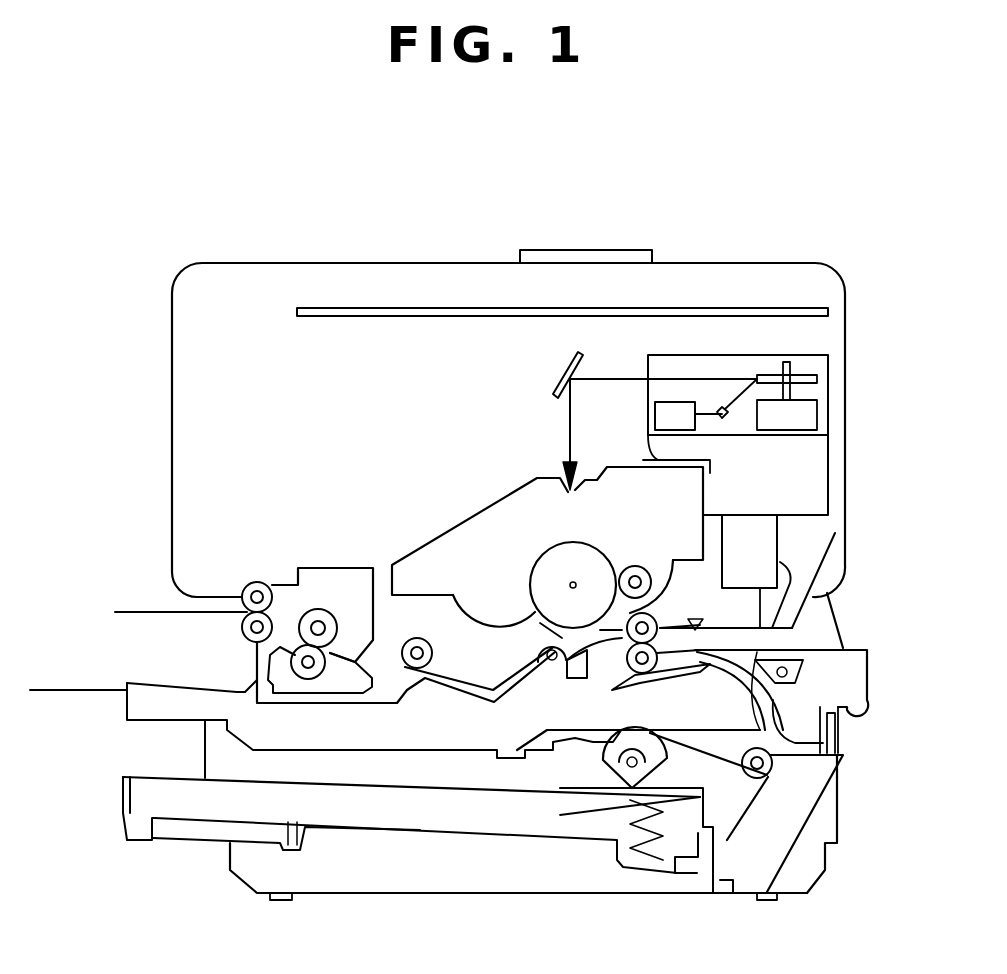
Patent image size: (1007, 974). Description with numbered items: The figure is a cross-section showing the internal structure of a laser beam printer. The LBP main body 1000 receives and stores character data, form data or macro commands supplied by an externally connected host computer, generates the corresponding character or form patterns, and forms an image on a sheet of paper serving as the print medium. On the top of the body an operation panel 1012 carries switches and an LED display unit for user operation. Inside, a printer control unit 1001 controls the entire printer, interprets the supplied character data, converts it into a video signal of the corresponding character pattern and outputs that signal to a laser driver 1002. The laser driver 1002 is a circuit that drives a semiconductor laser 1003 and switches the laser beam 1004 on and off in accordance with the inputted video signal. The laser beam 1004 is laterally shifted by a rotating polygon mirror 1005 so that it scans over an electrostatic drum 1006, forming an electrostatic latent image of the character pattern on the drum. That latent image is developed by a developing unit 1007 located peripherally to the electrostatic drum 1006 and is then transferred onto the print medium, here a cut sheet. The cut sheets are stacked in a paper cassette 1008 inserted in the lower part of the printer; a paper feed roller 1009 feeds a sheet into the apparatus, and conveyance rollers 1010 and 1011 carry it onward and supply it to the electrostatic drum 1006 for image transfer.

The LBP main body 1000 is at (733, 260).
The printer control unit 1001 is at (805, 308).
The laser driver 1002 is at (655, 418).
The semiconductor laser 1003 is at (722, 418).
The laser beam 1004 is at (690, 378).
The rotating polygon mirror 1005 is at (817, 379).
The electrostatic drum 1006 is at (547, 553).
The developing unit 1007 is at (437, 548).
The paper cassette 1008 is at (123, 830).
The paper feed roller 1009 is at (640, 733).
The conveyance roller 1010 is at (843, 797).
The conveyance roller 1011 is at (627, 693).
The operation panel 1012 is at (572, 253).